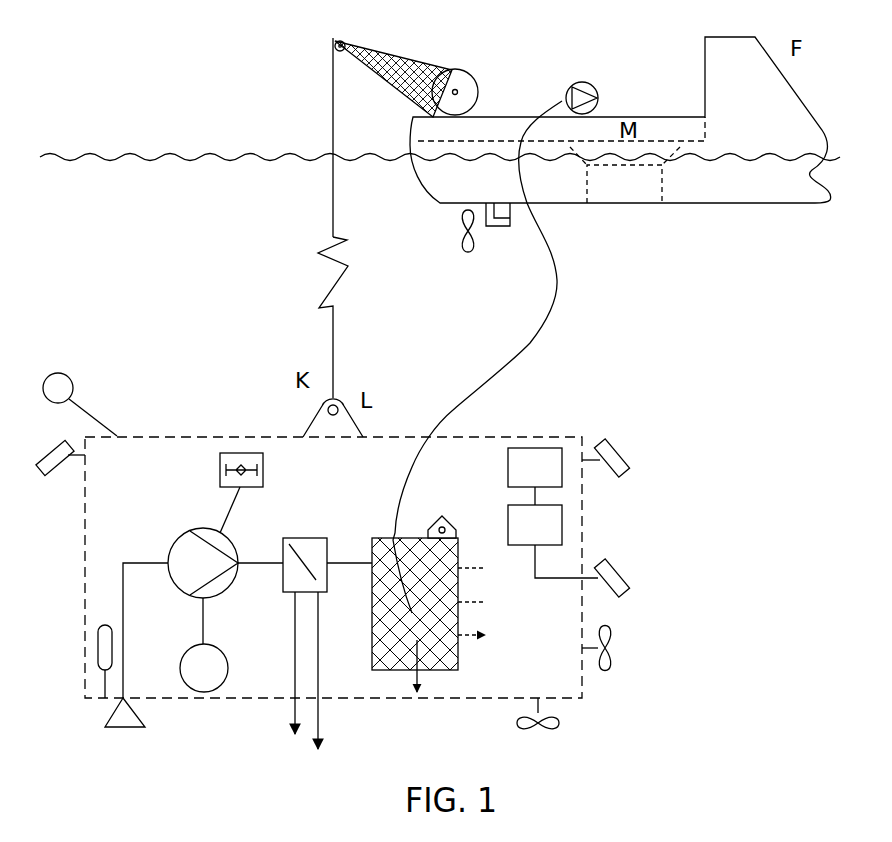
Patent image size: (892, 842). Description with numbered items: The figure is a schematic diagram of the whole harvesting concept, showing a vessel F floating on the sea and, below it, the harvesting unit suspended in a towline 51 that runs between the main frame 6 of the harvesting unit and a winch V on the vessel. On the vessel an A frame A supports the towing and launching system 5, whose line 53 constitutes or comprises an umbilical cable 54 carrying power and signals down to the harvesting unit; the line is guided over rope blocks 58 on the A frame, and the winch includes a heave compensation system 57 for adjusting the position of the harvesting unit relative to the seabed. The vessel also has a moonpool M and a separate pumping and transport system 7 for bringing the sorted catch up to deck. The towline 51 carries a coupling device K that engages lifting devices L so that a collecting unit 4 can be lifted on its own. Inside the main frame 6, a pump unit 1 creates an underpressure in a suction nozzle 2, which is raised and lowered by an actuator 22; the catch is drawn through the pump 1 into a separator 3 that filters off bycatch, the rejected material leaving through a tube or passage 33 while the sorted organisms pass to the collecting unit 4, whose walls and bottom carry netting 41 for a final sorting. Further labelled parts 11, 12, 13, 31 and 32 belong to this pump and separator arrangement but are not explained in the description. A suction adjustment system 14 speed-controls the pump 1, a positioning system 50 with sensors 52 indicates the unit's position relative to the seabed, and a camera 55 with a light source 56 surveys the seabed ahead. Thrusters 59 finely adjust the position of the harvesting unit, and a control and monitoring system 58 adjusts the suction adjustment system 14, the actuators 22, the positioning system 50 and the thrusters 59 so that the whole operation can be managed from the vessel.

The pump unit 1 is at (220, 522).
The suction nozzle 2 is at (105, 727).
The separator 3 is at (300, 538).
The collecting unit 4 is at (398, 487).
The towing and launching system 5 is at (250, 219).
The main frame 6 is at (129, 480).
The pumping and transport system 7 is at (600, 92).
The suction line 11 is at (123, 642).
The pump housing 12 is at (228, 548).
The pump motor 13 is at (228, 670).
The suction adjustment system 14 is at (263, 470).
The actuator 22 is at (98, 650).
The connecting line 31 is at (268, 570).
The connecting line 32 is at (349, 530).
The tube or passage 33 is at (293, 640).
The netting 41 is at (408, 650).
The positioning system 50 is at (549, 536).
The towline 51 is at (340, 334).
The sensor 52 is at (624, 572).
The line 53 is at (386, 247).
The umbilical cable 54 is at (386, 247).
The camera 55 is at (624, 452).
The light source 56 is at (52, 446).
The heave compensation system 57 is at (474, 72).
The control and monitoring system 58 is at (448, 247).
The thruster 59 is at (560, 718).